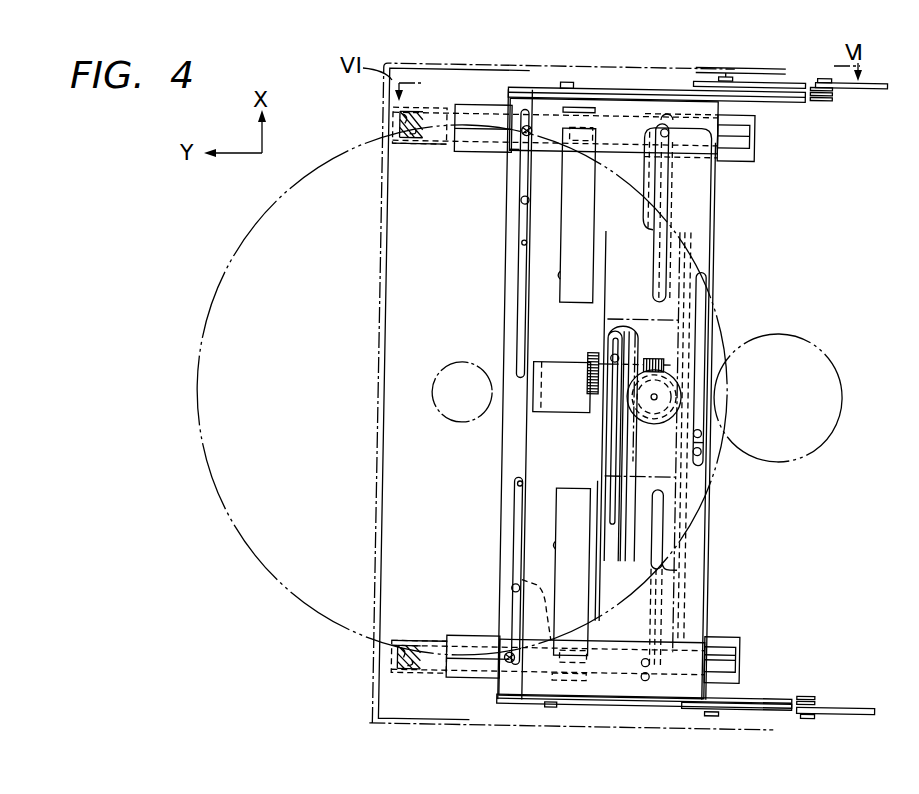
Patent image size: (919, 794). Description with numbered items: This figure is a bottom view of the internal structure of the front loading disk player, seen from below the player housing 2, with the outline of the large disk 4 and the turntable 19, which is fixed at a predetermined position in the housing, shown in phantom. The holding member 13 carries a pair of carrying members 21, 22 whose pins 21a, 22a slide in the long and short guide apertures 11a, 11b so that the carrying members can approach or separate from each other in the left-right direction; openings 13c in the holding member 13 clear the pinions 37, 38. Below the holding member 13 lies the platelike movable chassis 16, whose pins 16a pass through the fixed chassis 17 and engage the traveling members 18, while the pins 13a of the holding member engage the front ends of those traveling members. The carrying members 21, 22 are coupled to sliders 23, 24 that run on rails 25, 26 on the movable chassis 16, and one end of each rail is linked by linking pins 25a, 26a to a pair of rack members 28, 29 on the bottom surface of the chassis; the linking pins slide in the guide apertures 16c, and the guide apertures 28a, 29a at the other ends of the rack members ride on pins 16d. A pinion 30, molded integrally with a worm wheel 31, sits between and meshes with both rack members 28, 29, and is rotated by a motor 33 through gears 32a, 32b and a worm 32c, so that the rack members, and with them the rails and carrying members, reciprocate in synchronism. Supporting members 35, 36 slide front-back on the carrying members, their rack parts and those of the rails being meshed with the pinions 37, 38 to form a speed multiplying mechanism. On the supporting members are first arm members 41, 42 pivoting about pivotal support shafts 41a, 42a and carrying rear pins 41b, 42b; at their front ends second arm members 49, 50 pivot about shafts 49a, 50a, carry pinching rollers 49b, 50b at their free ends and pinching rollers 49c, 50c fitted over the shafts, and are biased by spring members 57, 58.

The player housing 2 is at (381, 353).
The disk 4 is at (268, 570).
The long guide aperture 11a is at (520, 245).
The short guide aperture 11b is at (714, 265).
The holding member 13 is at (503, 506).
The pin 13a is at (561, 82).
The opening 13c is at (558, 276).
The movable chassis 16 is at (706, 575).
The pin 16a is at (726, 74).
The guide aperture 16c is at (704, 287).
The pin 16d is at (618, 357).
The fixed chassis 17 is at (880, 84).
The traveling member 18 is at (666, 88).
The turntable 19 is at (812, 360).
The carrying member 21 is at (752, 152).
The pin 21a is at (519, 202).
The carrying member 22 is at (736, 642).
The pin 22a is at (514, 588).
The slider 23 is at (586, 128).
The slider 24 is at (602, 685).
The rail 25 is at (752, 137).
The linking pin 25a is at (658, 118).
The rail 26 is at (736, 662).
The linking pin 26a is at (632, 690).
The rack member 28 is at (718, 250).
The guide aperture 28a is at (662, 512).
The rack member 29 is at (606, 541).
The guide aperture 29a is at (612, 450).
The pinion 30 is at (670, 380).
The worm wheel 31 is at (700, 434).
The gear 32a is at (638, 348).
The gear 32b is at (587, 352).
The worm 32c is at (662, 360).
The motor 33 is at (532, 388).
The supporting member 35 is at (402, 145).
The supporting member 36 is at (402, 645).
The pinion 37 is at (580, 107).
The pinion 38 is at (574, 685).
The first arm member 41 is at (425, 112).
The pivotal support shaft 41a is at (440, 140).
The pin 41b is at (527, 126).
The first arm member 42 is at (418, 679).
The pivotal support shaft 42a is at (443, 648).
The pin 42b is at (522, 684).
The second arm member 49 is at (440, 108).
The pivotal support shaft 49a is at (398, 122).
The pinching roller 49b is at (510, 163).
The pinching roller 49c is at (400, 140).
The second arm member 50 is at (438, 679).
The pivotal support shaft 50a is at (396, 664).
The pinching roller 50b is at (506, 643).
The pinching roller 50c is at (392, 650).
The spring member 57 is at (398, 99).
The spring member 58 is at (396, 680).